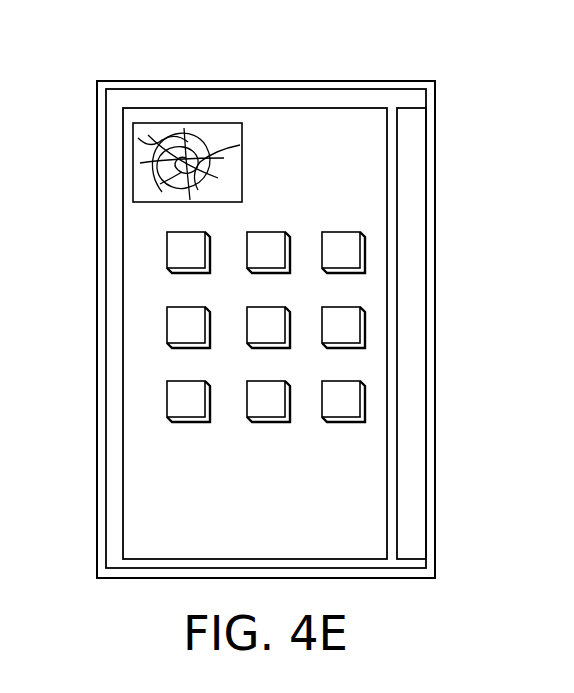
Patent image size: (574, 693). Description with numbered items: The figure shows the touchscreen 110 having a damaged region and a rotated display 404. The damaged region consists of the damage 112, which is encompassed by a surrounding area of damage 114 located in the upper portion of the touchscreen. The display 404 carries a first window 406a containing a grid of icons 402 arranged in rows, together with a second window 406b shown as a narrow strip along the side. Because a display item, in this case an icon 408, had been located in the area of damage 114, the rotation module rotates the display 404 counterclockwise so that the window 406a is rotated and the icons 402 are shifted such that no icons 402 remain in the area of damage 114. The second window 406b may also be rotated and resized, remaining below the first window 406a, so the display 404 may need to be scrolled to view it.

The touchscreen 110 is at (422, 82).
The display 404 is at (260, 89).
The window 406a is at (342, 108).
The second window 406b is at (410, 108).
The damage 112 is at (145, 128).
The area of damage 114 is at (190, 128).
The icon 408 is at (167, 413).
The icons 402 is at (330, 425).